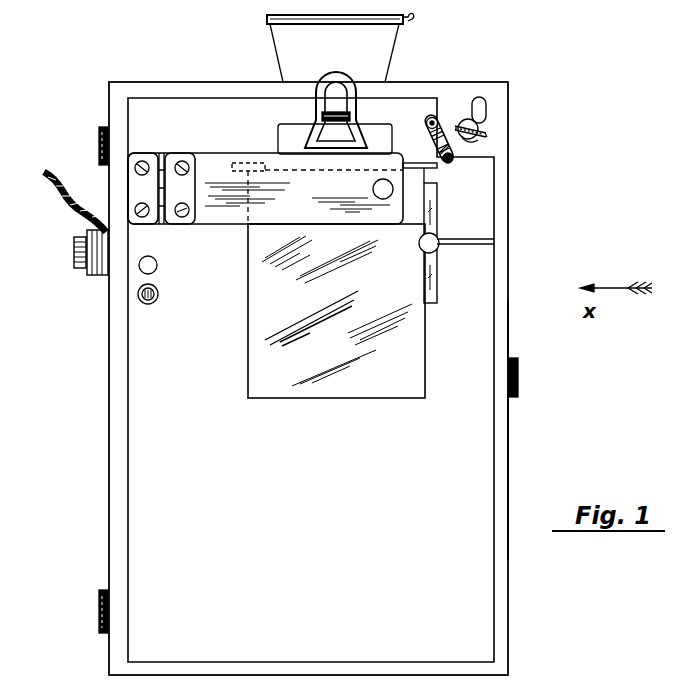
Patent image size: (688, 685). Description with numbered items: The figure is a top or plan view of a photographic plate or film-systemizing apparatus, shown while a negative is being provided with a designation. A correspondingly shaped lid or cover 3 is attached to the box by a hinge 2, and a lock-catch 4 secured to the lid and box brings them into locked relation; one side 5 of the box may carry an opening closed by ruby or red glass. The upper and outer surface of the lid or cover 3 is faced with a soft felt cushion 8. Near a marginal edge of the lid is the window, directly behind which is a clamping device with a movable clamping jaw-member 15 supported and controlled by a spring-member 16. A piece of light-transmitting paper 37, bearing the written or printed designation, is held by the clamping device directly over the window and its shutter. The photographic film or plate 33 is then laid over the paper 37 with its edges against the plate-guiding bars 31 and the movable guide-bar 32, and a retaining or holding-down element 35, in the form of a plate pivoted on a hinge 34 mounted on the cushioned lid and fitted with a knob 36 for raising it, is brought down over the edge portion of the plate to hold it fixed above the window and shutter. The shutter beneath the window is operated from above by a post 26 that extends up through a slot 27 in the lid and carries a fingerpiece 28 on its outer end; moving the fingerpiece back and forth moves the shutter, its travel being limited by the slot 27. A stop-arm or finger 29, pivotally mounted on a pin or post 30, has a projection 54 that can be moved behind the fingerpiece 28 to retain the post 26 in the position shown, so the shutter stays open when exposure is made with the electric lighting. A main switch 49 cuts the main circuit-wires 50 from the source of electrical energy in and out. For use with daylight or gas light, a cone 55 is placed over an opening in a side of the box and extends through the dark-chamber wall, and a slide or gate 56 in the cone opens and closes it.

The hinge 2 is at (99, 145).
The lid or cover 3 is at (497, 90).
The lock-catch 4 is at (519, 378).
The side of the box 5 is at (511, 446).
The cushion 8 is at (150, 432).
The movable clamping jaw-member 15 is at (352, 98).
The spring-member 16 is at (323, 112).
The post 26 is at (470, 140).
The slot 27 is at (481, 106).
The fingerpiece 28 is at (488, 133).
The stop-arm or finger 29 is at (427, 126).
The pin or post 30 is at (450, 161).
The plate-guiding bars 31 is at (237, 162).
The movable guide-bar 32 is at (437, 279).
The photographic film or plate 33 is at (262, 346).
The hinge 34 is at (166, 153).
The retaining or holding-down element 35 is at (218, 222).
The knob 36 is at (373, 190).
The piece of paper 37 is at (285, 131).
The main switch 49 is at (97, 275).
The main circuit-wires 50 is at (60, 197).
The projection 54 is at (437, 120).
The cone 55 is at (282, 50).
The slide or gate 56 is at (412, 18).